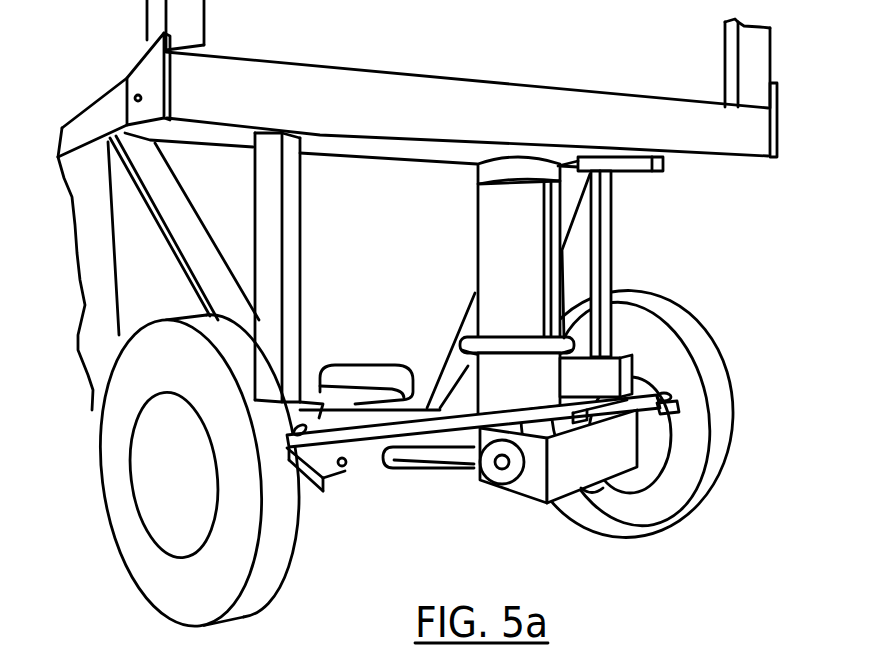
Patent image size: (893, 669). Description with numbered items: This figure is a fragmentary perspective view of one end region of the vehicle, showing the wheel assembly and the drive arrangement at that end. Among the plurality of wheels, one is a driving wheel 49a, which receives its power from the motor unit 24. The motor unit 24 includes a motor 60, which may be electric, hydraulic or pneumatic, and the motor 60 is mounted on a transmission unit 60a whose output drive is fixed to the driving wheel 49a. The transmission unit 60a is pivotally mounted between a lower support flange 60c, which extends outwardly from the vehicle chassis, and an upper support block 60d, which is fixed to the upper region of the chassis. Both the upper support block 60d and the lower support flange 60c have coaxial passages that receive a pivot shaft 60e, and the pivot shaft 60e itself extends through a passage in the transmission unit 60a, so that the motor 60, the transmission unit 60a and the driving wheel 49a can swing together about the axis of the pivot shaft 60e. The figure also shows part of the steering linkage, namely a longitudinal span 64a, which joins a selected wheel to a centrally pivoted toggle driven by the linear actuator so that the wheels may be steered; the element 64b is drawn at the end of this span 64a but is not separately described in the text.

The motor unit 24 is at (647, 560).
The driving wheel 49a is at (747, 381).
The motor 60 is at (483, 266).
The transmission unit 60a is at (480, 477).
The lower support flange 60c is at (413, 467).
The upper support block 60d is at (664, 162).
The pivot shaft 60e is at (605, 253).
The longitudinal span 64a is at (367, 390).
The pivot bolt 64b is at (330, 440).